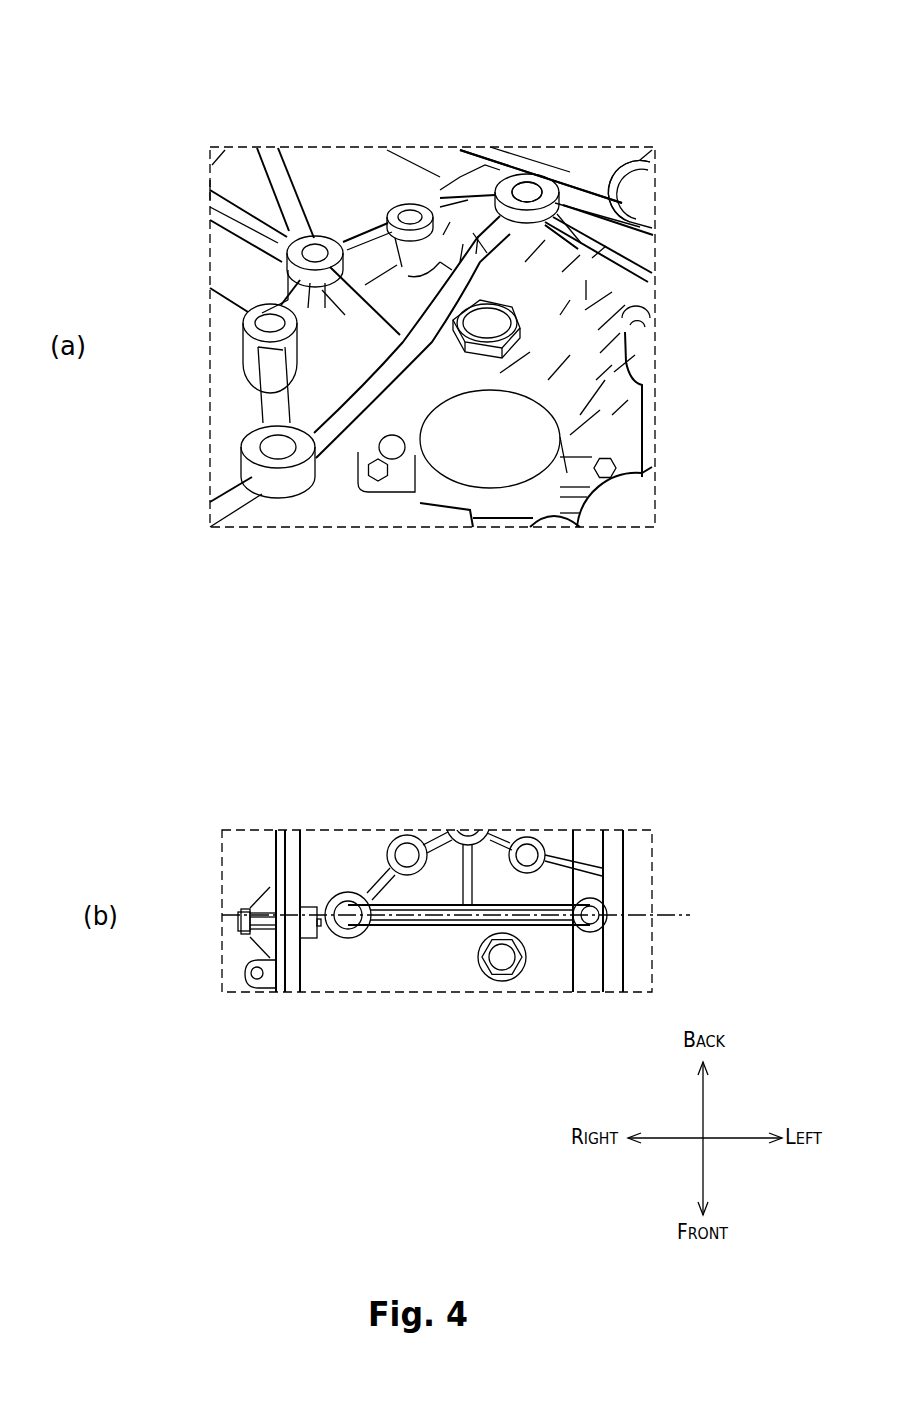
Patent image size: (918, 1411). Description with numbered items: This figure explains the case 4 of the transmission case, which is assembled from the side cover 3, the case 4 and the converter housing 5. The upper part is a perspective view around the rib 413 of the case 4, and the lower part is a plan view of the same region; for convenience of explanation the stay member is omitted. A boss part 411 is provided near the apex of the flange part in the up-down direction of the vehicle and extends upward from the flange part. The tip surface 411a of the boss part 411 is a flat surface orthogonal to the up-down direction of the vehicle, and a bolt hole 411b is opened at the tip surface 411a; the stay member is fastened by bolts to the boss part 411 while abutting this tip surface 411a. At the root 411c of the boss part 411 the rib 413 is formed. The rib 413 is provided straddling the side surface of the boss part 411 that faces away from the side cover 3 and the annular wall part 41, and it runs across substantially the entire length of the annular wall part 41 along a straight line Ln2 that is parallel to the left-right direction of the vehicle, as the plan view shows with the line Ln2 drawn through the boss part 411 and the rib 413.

The side cover 3 is at (584, 182).
The case 4 is at (343, 147).
The converter housing 5 is at (257, 828).
The annular wall part 41 is at (455, 235).
The boss part 411 is at (513, 167).
The tip surface 411a is at (628, 215).
The bolt hole 411b is at (523, 190).
The root 411c is at (535, 235).
The rib 413 is at (335, 393).
The straight line Ln2 is at (481, 915).